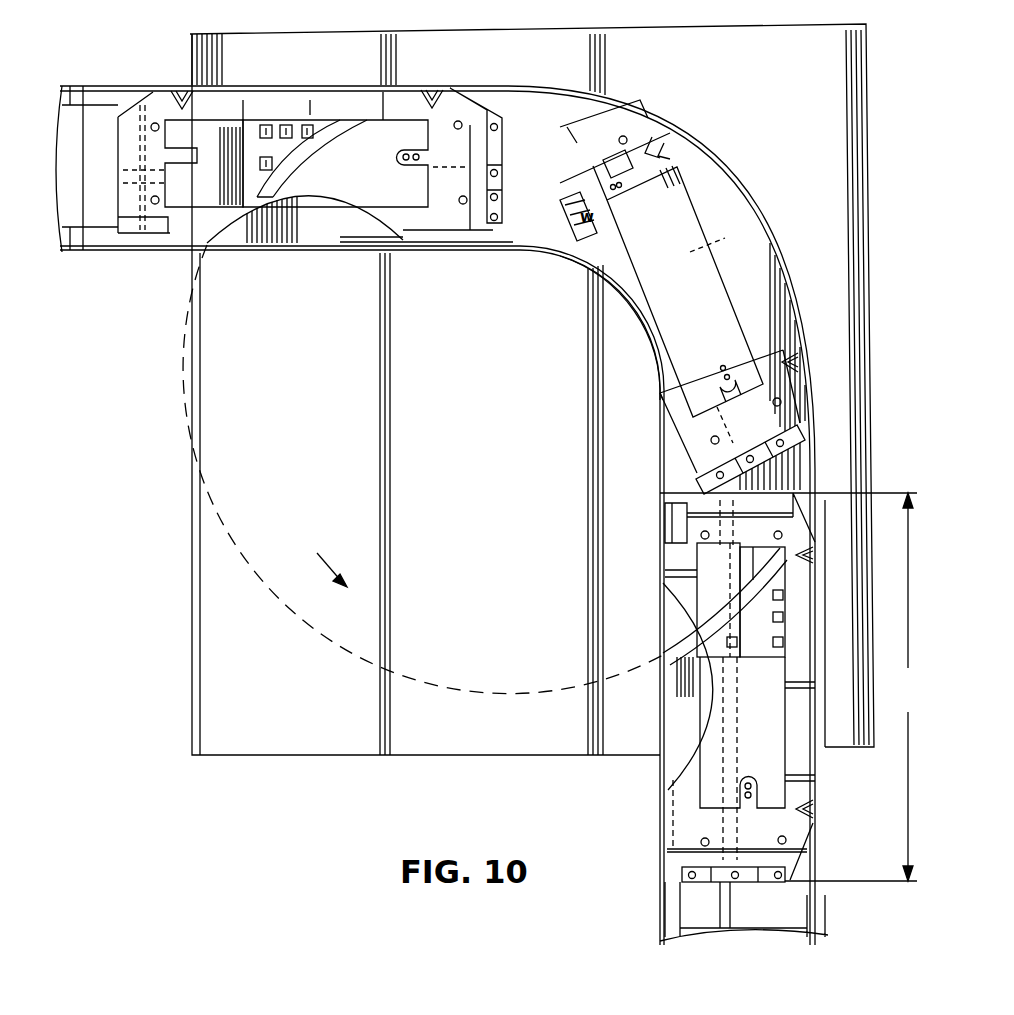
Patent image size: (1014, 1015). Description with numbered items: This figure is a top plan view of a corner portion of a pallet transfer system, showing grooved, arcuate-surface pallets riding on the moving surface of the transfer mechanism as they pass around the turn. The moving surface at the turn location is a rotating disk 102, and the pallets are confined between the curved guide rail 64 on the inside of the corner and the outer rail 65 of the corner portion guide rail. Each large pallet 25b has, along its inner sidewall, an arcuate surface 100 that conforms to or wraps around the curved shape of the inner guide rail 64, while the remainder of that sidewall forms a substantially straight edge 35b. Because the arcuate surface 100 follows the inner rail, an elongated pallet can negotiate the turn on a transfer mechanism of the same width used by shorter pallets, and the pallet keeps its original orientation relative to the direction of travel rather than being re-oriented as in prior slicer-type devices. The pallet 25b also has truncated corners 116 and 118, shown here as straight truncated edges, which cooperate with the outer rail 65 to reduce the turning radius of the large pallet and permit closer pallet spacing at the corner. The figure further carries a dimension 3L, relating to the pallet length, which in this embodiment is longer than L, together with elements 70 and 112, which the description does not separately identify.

The end cap 70 is at (80, 95).
The truncated corner 116 is at (128, 105).
The pallet 25b is at (402, 100).
The truncated corner 118 is at (483, 110).
The outer rail 65 is at (750, 193).
The inner guide rail 112 is at (577, 262).
The guide rail 64 is at (650, 347).
The arcuate surface 100 is at (333, 210).
The substantially straight edge 35b is at (440, 252).
The rotating disk 102 is at (493, 476).
The dimension length 3L is at (788, 687).